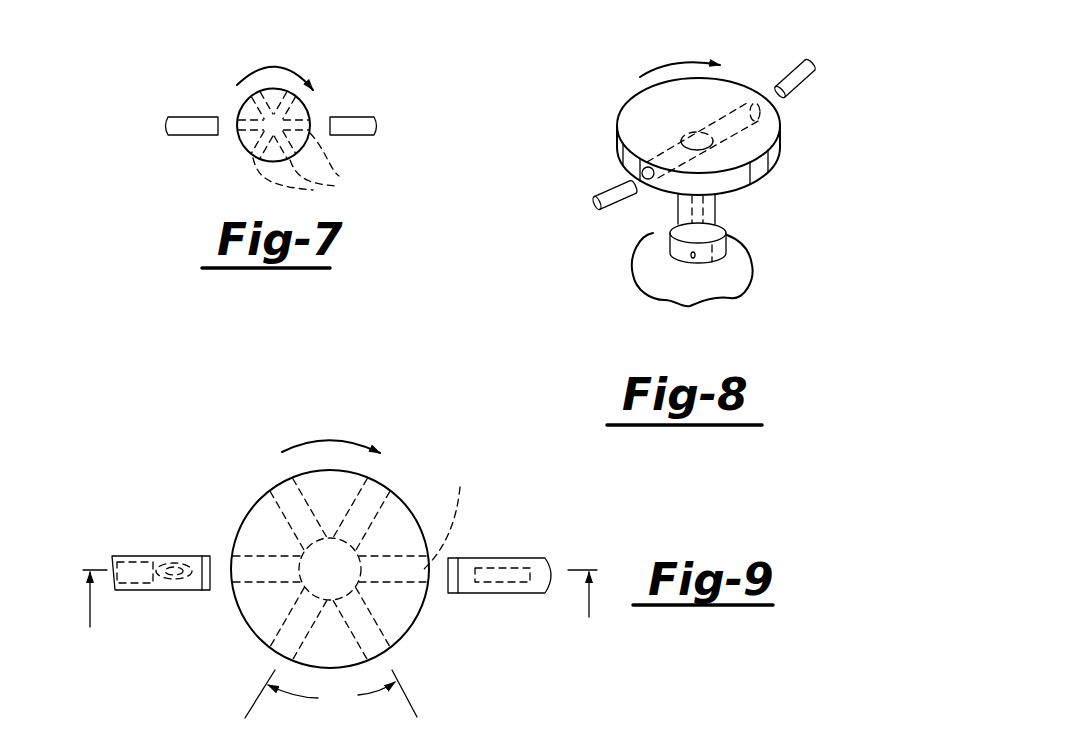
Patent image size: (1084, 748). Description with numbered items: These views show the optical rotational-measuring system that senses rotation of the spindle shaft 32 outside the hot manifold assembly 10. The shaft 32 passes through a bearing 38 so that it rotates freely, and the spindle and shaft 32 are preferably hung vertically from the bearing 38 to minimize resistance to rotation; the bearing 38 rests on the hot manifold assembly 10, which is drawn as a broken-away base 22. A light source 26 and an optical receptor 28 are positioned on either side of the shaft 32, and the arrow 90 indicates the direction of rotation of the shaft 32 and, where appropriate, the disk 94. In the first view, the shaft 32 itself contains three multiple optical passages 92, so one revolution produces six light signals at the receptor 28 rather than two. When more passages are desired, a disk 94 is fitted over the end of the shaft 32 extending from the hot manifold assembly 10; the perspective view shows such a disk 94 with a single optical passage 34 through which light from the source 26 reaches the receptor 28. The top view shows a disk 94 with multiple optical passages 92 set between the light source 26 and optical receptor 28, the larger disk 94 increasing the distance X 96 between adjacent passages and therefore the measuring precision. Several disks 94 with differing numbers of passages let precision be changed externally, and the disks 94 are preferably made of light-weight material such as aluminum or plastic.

In FIG. 9, the hot manifold assembly 10 is at (345, 616).
In FIG. 8, the machine base 22 is at (707, 290).
In FIG. 7, the light source 26 is at (183, 117).
In FIG. 8, the light source 26 is at (597, 200).
In FIG. 9, the light source 26 is at (153, 555).
In FIG. 7, the optical receptor 28 is at (357, 120).
In FIG. 8, the optical receptor 28 is at (821, 88).
In FIG. 9, the optical receptor 28 is at (500, 558).
In FIG. 7, the spindle shaft 32 is at (242, 143).
In FIG. 8, the spindle shaft 32 is at (700, 215).
In FIG. 8, the optical passage 34 is at (643, 172).
In FIG. 8, the bearing 38 is at (717, 253).
In FIG. 7, the arrow 90 is at (277, 68).
In FIG. 8, the arrow 90 is at (663, 64).
In FIG. 9, the arrow 90 is at (327, 442).
In FIG. 7, the multiple optical passages 92 is at (310, 145).
In FIG. 8, the multiple optical passages 92 is at (703, 140).
In FIG. 9, the multiple optical passages 92 is at (280, 483).
In FIG. 7, the disk 94 is at (273, 125).
In FIG. 8, the disk 94 is at (757, 163).
In FIG. 9, the disk 94 is at (397, 618).
In FIG. 9, the distance X between adjacent optical passages 96 is at (337, 716).